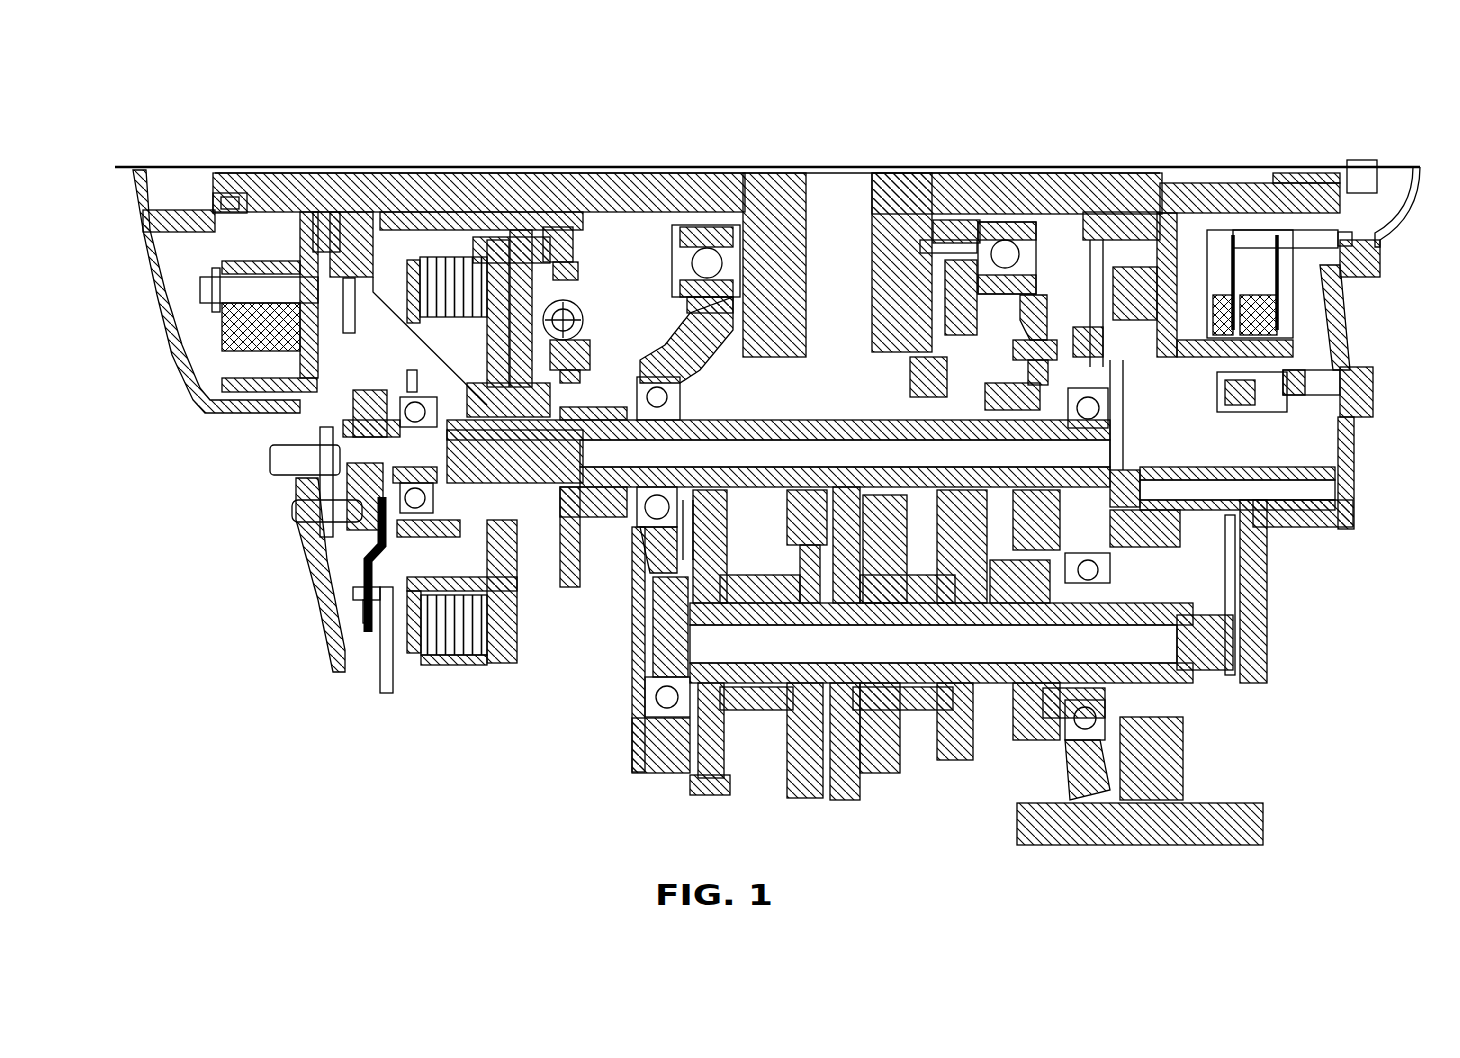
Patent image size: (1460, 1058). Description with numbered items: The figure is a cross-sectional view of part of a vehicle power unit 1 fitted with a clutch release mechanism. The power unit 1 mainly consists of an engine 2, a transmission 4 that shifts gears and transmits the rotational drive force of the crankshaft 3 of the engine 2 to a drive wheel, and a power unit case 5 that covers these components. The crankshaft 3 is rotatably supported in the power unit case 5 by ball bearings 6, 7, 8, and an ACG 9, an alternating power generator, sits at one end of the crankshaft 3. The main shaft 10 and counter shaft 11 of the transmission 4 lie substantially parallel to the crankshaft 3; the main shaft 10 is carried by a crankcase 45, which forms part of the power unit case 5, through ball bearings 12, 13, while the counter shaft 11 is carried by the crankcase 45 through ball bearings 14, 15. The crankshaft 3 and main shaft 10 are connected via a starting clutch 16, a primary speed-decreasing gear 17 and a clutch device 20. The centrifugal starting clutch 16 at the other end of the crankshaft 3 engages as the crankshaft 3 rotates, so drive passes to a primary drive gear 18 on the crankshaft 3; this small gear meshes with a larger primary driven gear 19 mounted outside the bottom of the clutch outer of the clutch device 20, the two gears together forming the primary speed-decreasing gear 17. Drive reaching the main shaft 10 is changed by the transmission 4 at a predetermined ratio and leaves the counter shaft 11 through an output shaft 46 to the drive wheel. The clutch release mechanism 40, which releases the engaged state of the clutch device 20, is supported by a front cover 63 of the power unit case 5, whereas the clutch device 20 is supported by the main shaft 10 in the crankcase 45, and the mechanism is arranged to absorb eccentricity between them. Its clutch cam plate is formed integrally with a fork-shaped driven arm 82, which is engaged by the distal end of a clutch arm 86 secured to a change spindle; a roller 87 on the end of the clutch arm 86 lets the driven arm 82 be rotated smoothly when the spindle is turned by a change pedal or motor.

The vehicle power unit 1 is at (1232, 118).
The engine 2 is at (1028, 165).
The crankshaft 3 is at (963, 165).
The transmission 4 is at (955, 790).
The power unit case 5 is at (1376, 364).
The ball bearing 6 is at (1040, 250).
The ball bearing 7 is at (690, 262).
The ball bearing 8 is at (215, 200).
The ACG 9 is at (1232, 335).
The main shaft 10 is at (795, 422).
The counter shaft 11 is at (1000, 682).
The ball bearing 12 is at (1115, 418).
The ball bearing 13 is at (633, 513).
The ball bearing 14 is at (1085, 722).
The ball bearing 15 is at (642, 688).
The starting clutch 16 is at (212, 338).
The primary speed-decreasing gear 17 is at (578, 232).
The primary drive gear 18 is at (575, 242).
The primary driven gear 19 is at (592, 297).
The clutch device 20 is at (451, 682).
The clutch release mechanism 40 is at (370, 660).
The crankcase 45 is at (635, 745).
The output shaft 46 is at (1205, 815).
The front cover 63 is at (205, 415).
The driven arm 82 is at (333, 655).
The clutch arm 86 is at (400, 682).
The roller 87 is at (330, 617).